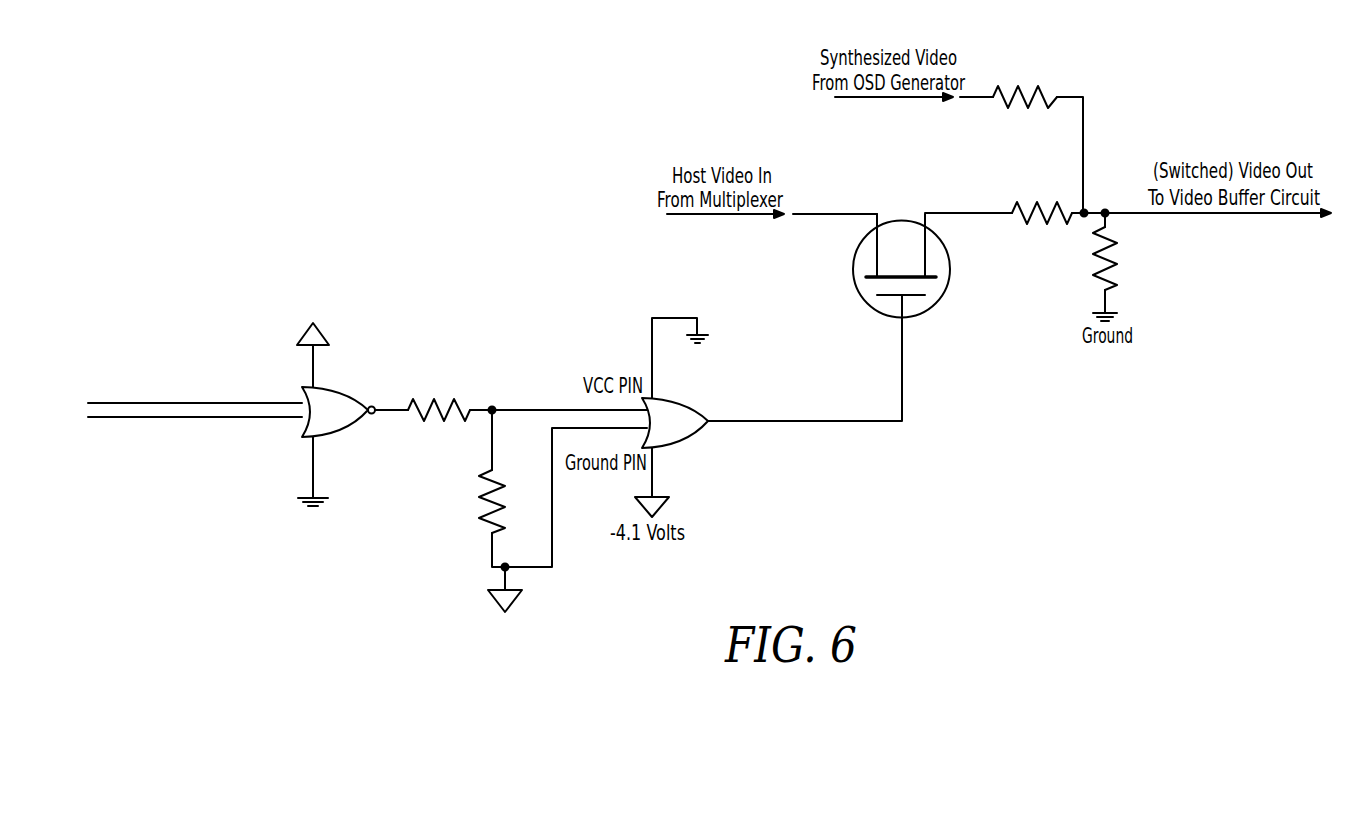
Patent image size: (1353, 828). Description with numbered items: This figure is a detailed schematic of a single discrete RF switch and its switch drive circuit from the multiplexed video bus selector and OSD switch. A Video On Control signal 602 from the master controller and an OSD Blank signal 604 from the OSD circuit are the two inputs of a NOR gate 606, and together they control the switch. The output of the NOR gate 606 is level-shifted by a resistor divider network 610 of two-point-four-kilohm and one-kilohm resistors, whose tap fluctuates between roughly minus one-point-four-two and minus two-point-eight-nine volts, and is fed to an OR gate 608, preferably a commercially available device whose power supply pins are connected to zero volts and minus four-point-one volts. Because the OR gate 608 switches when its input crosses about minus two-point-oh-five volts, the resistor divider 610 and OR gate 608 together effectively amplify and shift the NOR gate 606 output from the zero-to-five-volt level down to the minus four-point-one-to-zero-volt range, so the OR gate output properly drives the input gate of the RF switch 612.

The Video On Control signal 602 is at (215, 371).
The OSD Blank signal 604 is at (195, 442).
The NOR gate 606 is at (343, 358).
The OR gate 608 is at (673, 312).
The resistor divider network 610 is at (482, 387).
The RF switch 612 is at (848, 268).